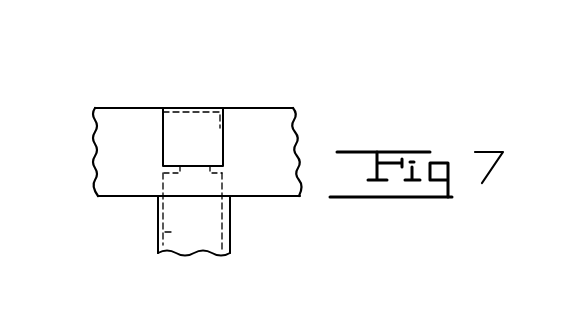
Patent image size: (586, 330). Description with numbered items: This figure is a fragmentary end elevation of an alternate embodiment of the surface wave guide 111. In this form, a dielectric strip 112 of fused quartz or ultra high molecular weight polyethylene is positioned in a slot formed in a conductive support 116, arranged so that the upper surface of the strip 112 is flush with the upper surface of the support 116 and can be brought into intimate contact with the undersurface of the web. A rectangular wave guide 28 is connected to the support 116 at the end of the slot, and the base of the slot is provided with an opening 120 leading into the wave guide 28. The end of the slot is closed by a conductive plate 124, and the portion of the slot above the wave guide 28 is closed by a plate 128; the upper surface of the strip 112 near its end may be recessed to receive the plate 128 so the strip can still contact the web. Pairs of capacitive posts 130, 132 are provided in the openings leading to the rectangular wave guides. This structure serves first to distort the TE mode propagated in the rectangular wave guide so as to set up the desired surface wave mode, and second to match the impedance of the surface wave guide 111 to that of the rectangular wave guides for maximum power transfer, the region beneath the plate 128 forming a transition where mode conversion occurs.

The surface wave guide 111 is at (317, 92).
The conductive support 116 is at (118, 178).
The conductive plate 124 is at (182, 117).
The plate 128 is at (221, 128).
The capacitive posts 130 is at (190, 166).
The capacitive posts 132 is at (228, 182).
The opening 120 is at (174, 176).
The dielectric strip 112 is at (193, 167).
The rectangular wave guide 28 is at (170, 233).